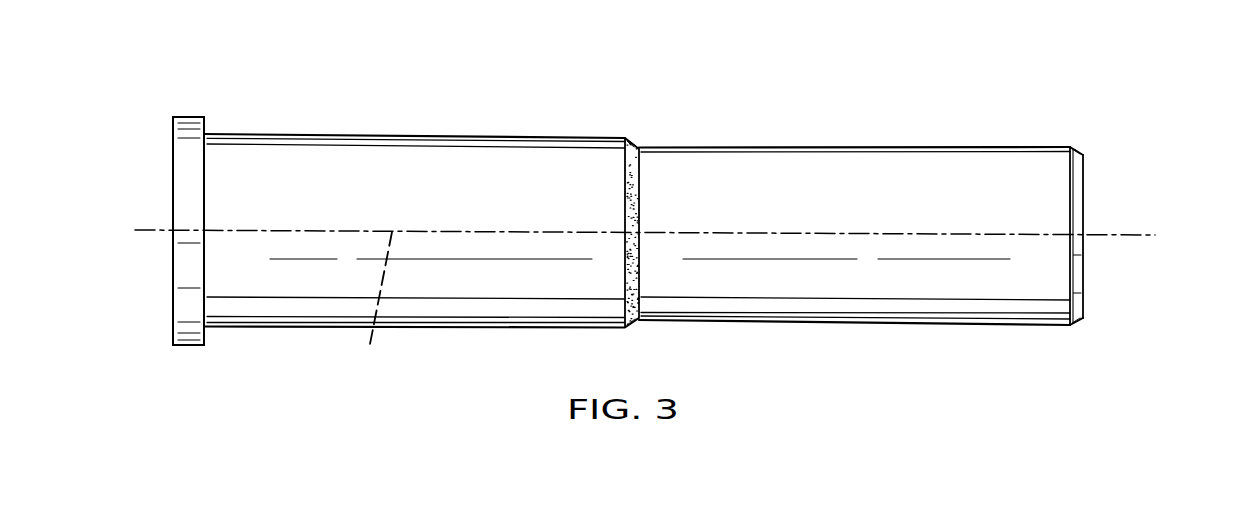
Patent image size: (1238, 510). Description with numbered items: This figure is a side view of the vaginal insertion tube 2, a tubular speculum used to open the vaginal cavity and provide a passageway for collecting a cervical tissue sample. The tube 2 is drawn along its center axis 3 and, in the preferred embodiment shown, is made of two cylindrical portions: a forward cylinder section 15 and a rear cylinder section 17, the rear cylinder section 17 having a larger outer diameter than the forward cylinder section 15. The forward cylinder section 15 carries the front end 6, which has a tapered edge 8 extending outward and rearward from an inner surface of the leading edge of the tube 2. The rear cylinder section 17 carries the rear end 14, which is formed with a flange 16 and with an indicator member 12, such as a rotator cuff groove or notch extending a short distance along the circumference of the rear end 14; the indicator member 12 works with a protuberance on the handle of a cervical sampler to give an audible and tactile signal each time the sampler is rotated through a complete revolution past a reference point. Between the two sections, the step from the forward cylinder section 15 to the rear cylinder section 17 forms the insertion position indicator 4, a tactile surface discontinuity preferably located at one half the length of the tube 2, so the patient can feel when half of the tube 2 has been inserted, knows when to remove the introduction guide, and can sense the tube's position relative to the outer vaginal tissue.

The vaginal insertion tube 2 is at (776, 74).
The center axis 3 is at (378, 309).
The insertion position indicator 4 is at (623, 178).
The front end 6 is at (1085, 187).
The tapered edge 8 is at (1079, 150).
The indicator member 12 is at (185, 229).
The rear end 14 is at (172, 320).
The forward cylinder section 15 is at (850, 146).
The flange 16 is at (190, 116).
The rear cylinder section 17 is at (404, 133).